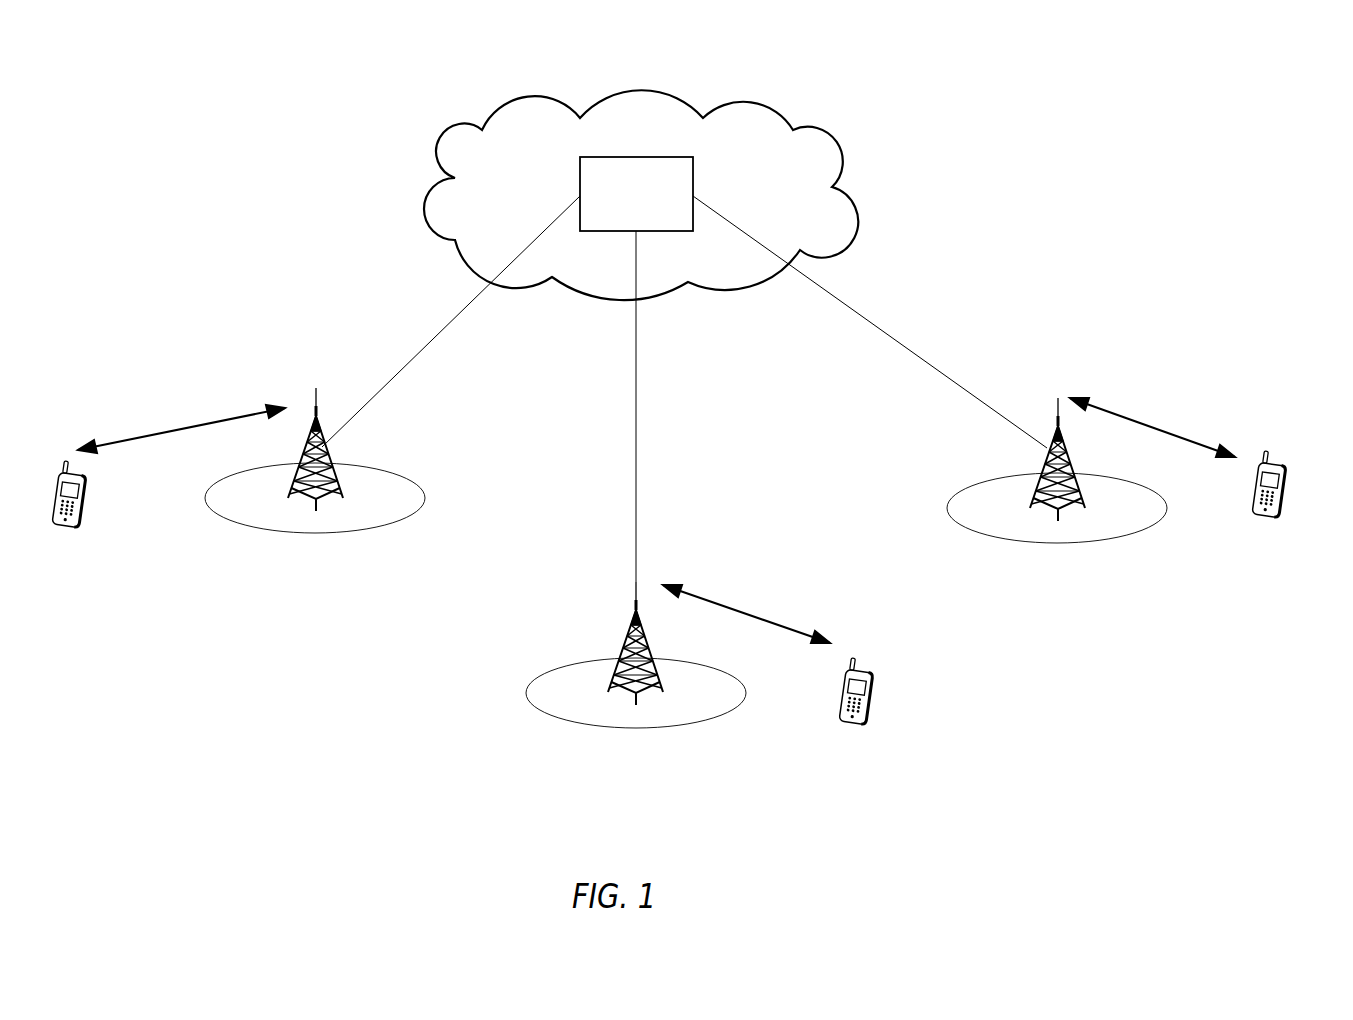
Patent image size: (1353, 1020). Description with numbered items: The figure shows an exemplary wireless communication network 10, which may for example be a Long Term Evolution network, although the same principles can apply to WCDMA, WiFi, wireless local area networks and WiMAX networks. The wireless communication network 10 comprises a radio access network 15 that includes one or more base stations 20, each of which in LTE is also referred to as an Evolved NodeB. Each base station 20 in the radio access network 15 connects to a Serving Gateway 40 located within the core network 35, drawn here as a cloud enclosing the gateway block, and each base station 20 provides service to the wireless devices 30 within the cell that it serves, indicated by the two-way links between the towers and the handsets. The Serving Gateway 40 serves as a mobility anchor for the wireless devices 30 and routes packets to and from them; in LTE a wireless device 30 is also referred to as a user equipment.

The wireless communication network 10 is at (1041, 100).
The radio access network 15 is at (293, 661).
The base station 20 is at (335, 472).
The wireless device 30 is at (68, 528).
The core network 35 is at (497, 105).
The Serving Gateway 40 is at (636, 194).